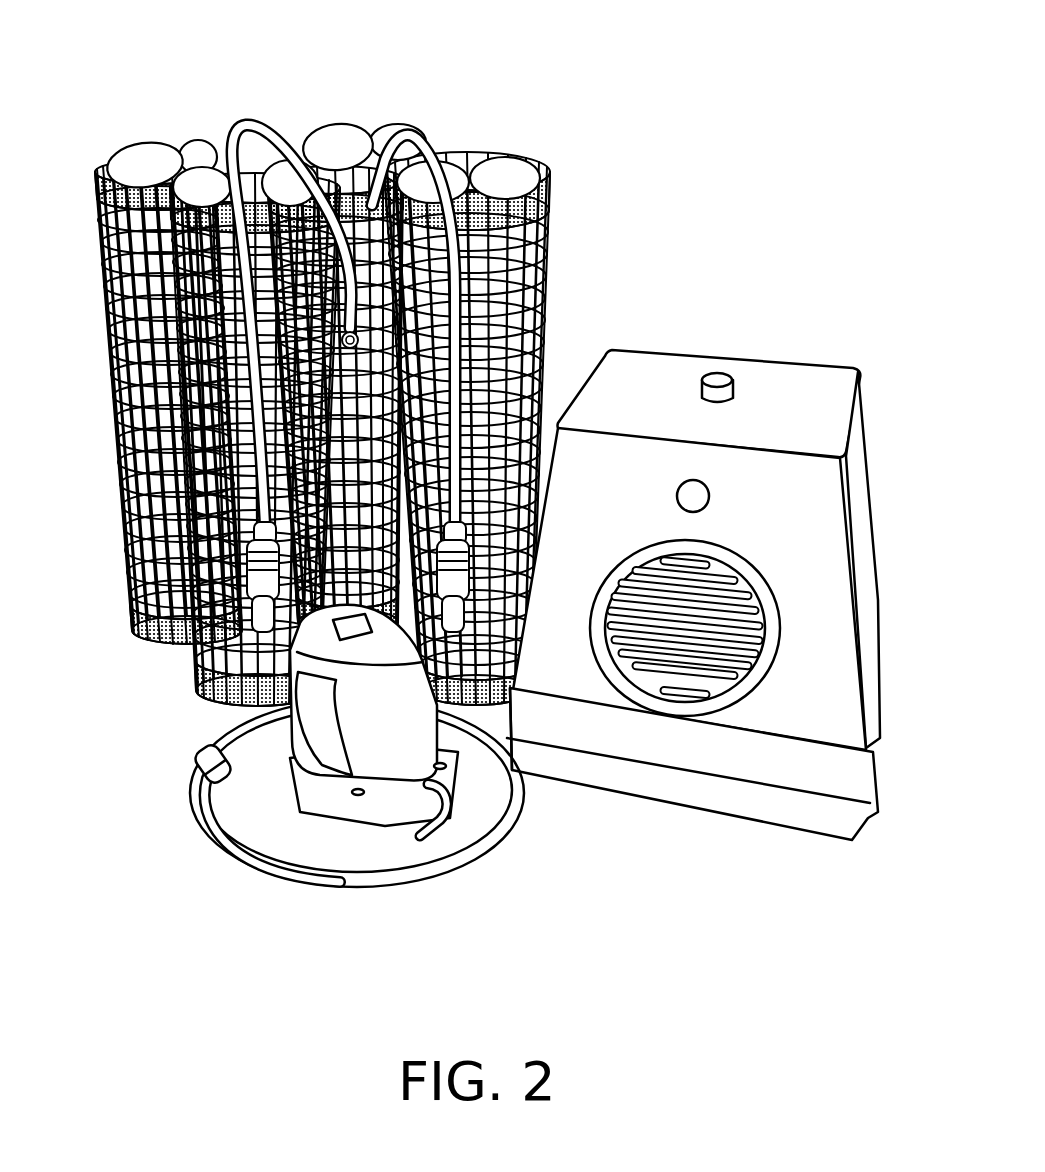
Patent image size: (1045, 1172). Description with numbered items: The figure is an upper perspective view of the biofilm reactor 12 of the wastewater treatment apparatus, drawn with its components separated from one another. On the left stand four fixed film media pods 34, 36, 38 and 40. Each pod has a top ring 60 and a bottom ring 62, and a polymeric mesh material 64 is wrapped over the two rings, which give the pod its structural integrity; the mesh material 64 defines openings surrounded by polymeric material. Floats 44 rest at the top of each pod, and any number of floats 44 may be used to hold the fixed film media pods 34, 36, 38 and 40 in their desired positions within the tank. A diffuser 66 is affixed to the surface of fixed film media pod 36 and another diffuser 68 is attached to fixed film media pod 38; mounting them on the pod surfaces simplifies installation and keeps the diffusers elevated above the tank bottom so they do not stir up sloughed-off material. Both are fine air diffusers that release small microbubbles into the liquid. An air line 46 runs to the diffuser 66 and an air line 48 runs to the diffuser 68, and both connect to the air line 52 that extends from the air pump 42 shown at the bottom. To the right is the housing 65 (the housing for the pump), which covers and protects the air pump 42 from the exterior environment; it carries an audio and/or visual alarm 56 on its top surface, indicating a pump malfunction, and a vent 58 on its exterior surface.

The biofilm reactor 12 is at (666, 196).
The fixed film media pod 34 is at (135, 382).
The fixed film media pod 36 is at (272, 160).
The fixed film media pod 38 is at (548, 178).
The fixed film media pod 40 is at (377, 125).
The air pump 42 is at (318, 722).
The floats 44 is at (142, 140).
The air line 46 is at (232, 132).
The air line 48 is at (412, 140).
The air line 52 is at (470, 846).
The alarm 56 is at (722, 370).
The vent 58 is at (735, 600).
The top ring 60 is at (96, 186).
The bottom ring 62 is at (122, 600).
The polymeric mesh material 64 is at (104, 396).
The housing 65 is at (729, 569).
The diffuser 66 is at (122, 545).
The diffuser 68 is at (470, 500).